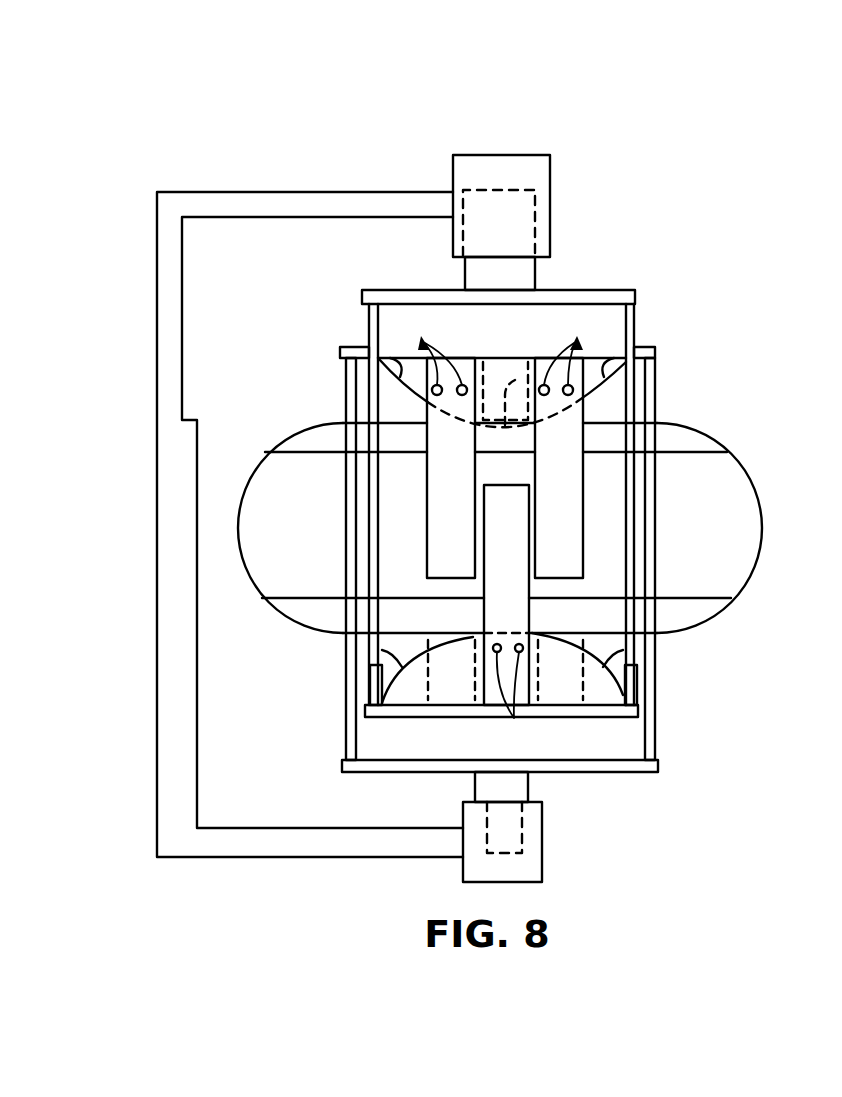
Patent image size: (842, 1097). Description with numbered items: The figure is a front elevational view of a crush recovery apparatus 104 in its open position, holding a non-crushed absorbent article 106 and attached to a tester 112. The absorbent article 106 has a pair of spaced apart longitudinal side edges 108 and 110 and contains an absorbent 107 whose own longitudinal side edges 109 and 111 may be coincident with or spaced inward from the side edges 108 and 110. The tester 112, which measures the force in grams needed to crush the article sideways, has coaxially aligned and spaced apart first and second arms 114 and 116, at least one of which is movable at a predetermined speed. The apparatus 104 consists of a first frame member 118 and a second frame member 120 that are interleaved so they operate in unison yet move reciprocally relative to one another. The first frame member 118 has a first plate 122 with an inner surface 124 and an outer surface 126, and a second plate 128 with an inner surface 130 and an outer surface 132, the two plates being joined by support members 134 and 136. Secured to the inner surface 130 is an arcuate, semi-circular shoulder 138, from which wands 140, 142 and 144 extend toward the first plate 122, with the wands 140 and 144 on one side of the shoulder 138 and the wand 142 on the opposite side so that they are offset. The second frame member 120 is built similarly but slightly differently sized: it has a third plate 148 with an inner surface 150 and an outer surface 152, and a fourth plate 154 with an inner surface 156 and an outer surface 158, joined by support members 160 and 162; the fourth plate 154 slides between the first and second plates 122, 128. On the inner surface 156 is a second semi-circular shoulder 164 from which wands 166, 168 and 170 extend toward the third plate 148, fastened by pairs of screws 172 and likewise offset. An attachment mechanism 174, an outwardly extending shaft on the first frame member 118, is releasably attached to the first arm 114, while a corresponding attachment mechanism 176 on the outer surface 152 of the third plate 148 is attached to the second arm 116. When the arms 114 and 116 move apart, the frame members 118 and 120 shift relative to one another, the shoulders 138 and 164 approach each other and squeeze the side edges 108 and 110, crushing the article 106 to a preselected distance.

The apparatus 104 is at (712, 168).
The absorbent article 106 is at (760, 470).
The absorbent 107 is at (748, 551).
The longitudinal side edge 108 is at (660, 428).
The longitudinal side edge 109 is at (692, 455).
The longitudinal side edge 110 is at (332, 638).
The longitudinal side edge 111 is at (292, 606).
The tester 112 is at (496, 148).
The first arm 114 is at (534, 193).
The second arm 116 is at (542, 845).
The first frame member 118 is at (655, 294).
The second frame member 120 is at (672, 802).
The first plate 122 is at (600, 297).
The inner surface 124 is at (553, 305).
The outer surface 126 is at (423, 290).
The second plate 128 is at (628, 717).
The inner surface 130 is at (382, 704).
The outer surface 132 is at (567, 718).
The support member 134 is at (368, 324).
The support member 136 is at (636, 322).
The shoulder 138 is at (630, 658).
The wand 140 is at (428, 648).
The wand 142 is at (497, 592).
The wand 144 is at (595, 640).
The third plate 148 is at (364, 775).
The inner surface 150 is at (390, 758).
The outer surface 152 is at (403, 773).
The fourth plate 154 is at (339, 353).
The inner surface 156 is at (400, 362).
The outer surface 158 is at (362, 350).
The support member 160 is at (345, 374).
The support member 162 is at (638, 676).
The shoulder 164 is at (615, 392).
The wand 166 is at (440, 506).
The wand 168 is at (503, 407).
The wand 170 is at (588, 495).
The screws 172 is at (499, 532).
The attachment mechanism 174 is at (536, 273).
The attachment mechanism 176 is at (532, 786).